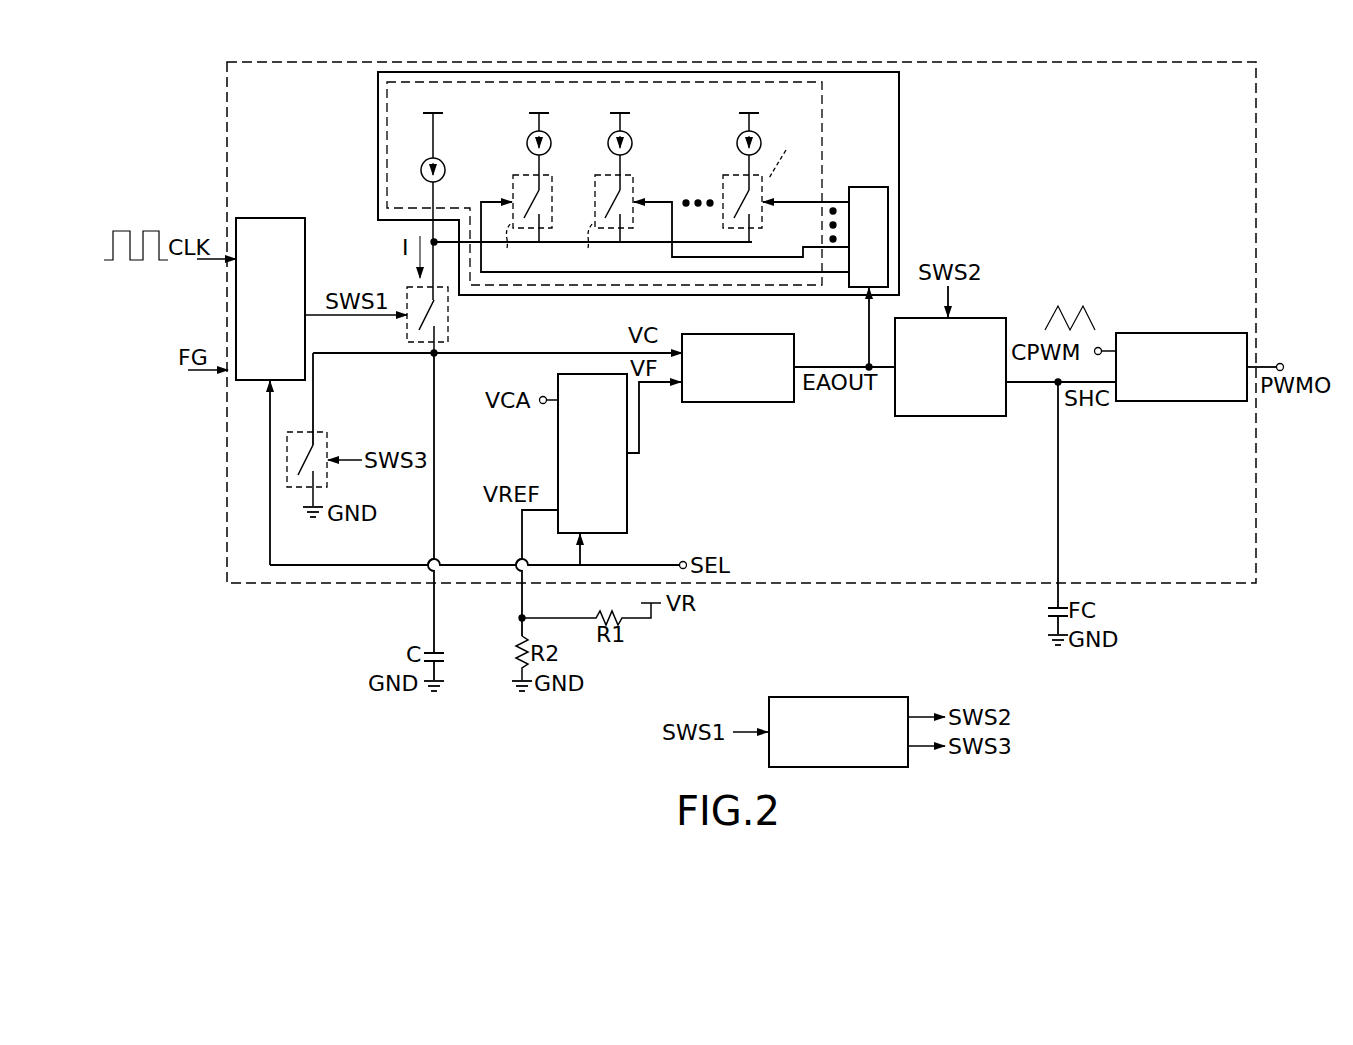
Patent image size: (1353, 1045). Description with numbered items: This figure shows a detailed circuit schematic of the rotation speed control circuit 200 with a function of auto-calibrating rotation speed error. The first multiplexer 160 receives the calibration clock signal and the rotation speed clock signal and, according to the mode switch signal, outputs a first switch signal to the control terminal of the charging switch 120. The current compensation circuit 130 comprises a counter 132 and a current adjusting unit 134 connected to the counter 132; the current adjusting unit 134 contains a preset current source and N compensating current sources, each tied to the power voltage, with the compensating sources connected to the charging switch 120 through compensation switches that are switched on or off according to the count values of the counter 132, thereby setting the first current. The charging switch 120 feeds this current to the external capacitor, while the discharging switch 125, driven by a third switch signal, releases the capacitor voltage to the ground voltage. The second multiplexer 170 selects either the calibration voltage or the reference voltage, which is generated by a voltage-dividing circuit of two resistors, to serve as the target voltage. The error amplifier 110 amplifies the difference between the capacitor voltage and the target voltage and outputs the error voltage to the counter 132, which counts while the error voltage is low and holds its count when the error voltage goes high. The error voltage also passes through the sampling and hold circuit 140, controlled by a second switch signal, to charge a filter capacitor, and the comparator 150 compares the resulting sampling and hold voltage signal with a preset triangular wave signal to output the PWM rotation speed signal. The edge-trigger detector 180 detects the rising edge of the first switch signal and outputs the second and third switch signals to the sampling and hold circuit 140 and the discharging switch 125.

The rotation speed control circuit 200 is at (170, 107).
The error amplifier 110 is at (738, 402).
The charging switch 120 is at (448, 325).
The discharging switch 125 is at (322, 430).
The current compensation circuit 130 is at (899, 147).
The counter 132 is at (888, 237).
The current adjusting unit 134 is at (822, 108).
The sampling and hold circuit 140 is at (950, 416).
The comparator 150 is at (1181, 401).
The first multiplexer 160 is at (271, 218).
The second multiplexer 170 is at (627, 505).
The edge-trigger detector 180 is at (838, 697).